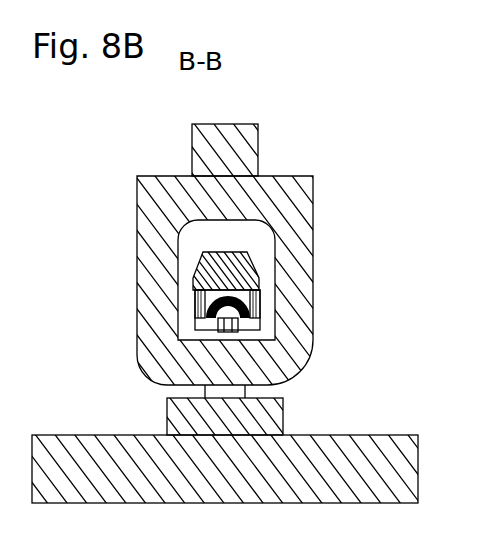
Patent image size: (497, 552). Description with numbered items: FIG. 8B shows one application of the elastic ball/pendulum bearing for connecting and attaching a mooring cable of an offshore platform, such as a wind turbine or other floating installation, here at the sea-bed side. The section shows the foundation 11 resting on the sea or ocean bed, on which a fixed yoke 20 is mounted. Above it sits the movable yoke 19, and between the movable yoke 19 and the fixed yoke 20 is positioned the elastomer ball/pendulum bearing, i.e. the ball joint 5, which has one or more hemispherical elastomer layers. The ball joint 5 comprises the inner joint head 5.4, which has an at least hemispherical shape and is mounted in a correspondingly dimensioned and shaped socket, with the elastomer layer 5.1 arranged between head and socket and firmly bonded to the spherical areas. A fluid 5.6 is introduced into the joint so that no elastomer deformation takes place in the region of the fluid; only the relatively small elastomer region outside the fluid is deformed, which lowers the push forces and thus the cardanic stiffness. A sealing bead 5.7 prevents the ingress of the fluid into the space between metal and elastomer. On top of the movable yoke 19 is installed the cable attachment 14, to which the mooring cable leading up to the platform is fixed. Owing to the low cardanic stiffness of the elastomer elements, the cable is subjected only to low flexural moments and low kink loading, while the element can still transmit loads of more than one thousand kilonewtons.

The cable attachment 14 is at (496, 114).
The movable yoke 19 is at (287, 193).
The fixed yoke 20 is at (170, 222).
The foundation 11 is at (390, 434).
The ball joint 5 is at (222, 275).
The fluid 5.6 is at (195, 288).
The sealing bead 5.7 is at (262, 298).
The elastomer layer 5.1 is at (207, 303).
The joint head 5.4 is at (228, 316).